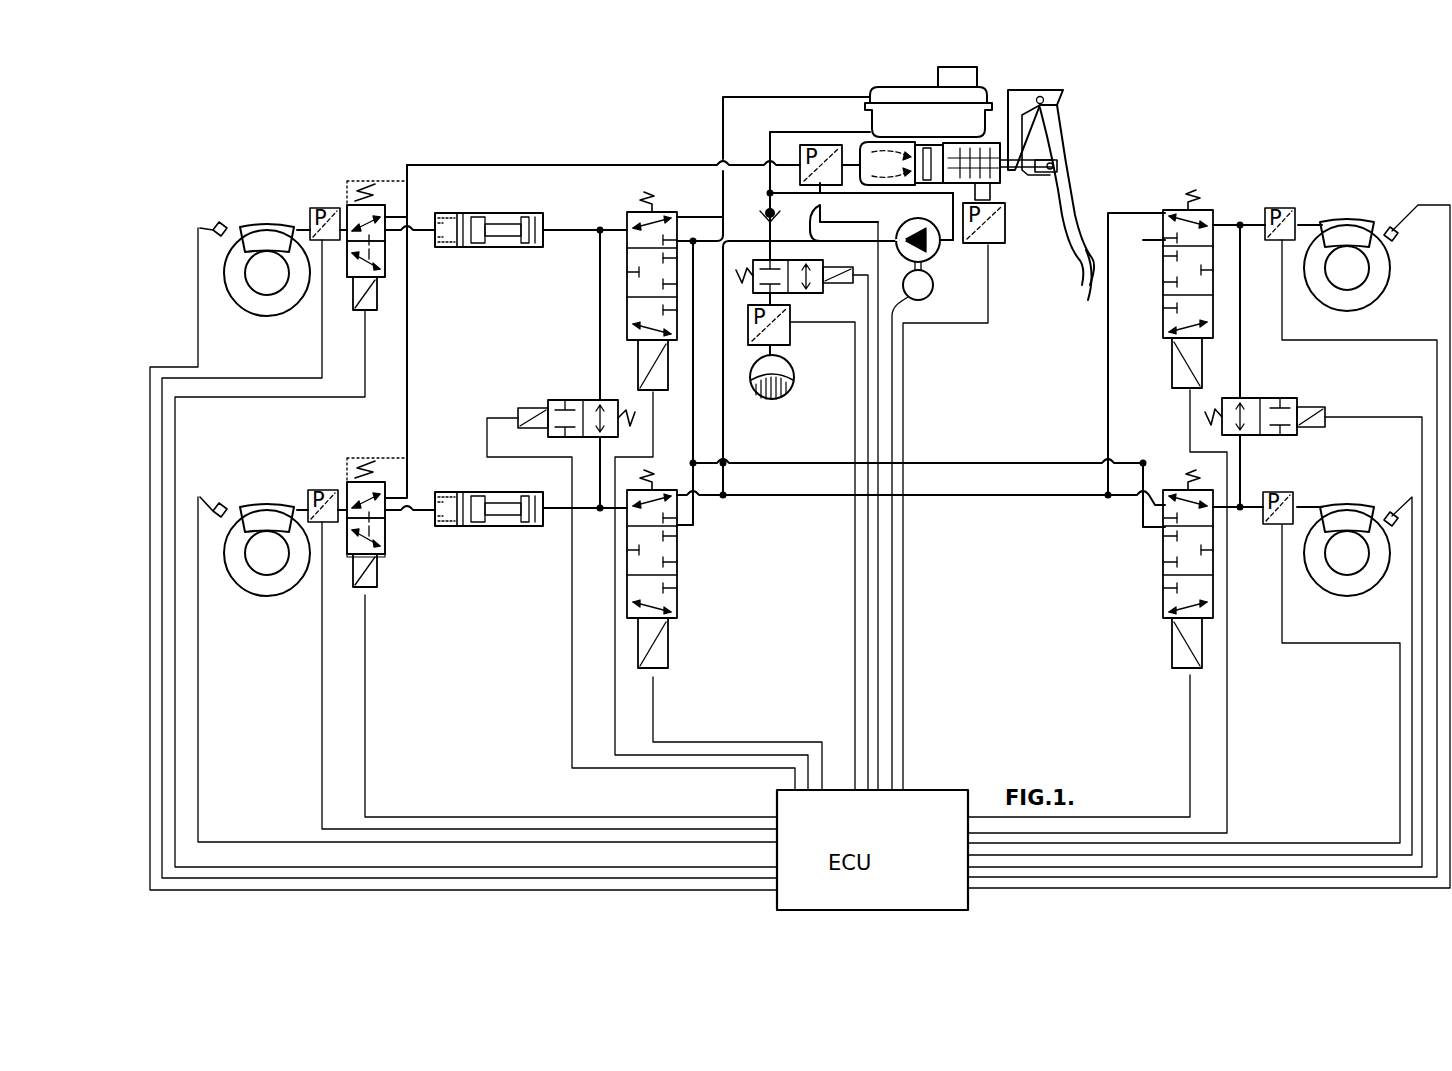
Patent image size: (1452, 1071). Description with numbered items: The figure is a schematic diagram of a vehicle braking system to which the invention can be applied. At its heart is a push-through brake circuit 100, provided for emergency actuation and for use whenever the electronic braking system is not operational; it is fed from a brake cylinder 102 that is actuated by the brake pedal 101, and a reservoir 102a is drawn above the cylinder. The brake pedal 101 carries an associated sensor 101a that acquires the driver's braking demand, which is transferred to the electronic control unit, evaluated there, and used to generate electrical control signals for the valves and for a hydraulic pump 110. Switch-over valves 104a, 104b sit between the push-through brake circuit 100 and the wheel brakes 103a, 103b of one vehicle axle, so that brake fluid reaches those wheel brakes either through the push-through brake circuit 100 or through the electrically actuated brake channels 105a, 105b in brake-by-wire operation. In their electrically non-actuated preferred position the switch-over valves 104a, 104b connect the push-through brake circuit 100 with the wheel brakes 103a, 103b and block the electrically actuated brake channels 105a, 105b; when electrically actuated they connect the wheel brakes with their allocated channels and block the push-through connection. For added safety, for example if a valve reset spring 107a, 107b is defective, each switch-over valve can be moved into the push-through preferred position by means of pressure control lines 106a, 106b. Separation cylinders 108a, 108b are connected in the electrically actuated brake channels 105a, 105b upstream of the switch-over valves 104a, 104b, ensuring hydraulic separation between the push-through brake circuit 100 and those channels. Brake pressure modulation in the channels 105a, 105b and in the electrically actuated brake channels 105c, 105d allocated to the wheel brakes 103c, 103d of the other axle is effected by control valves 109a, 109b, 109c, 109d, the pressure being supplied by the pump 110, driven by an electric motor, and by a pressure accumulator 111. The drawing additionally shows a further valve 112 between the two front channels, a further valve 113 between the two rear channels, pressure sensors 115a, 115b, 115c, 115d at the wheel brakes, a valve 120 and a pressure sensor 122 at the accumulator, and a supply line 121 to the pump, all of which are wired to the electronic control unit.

The push-through brake circuit 100 is at (603, 150).
The brake pedal 101 is at (1058, 215).
The sensor 101a is at (1007, 225).
The brake cylinder 102 is at (905, 160).
The fluid reservoir 102a is at (880, 93).
The wheel brake 103a is at (262, 226).
The wheel brake 103b is at (262, 500).
The wheel brake 103c is at (1348, 500).
The wheel brake 103d is at (1347, 224).
The switch-over valve 104a is at (385, 258).
The switch-over valve 104b is at (385, 542).
The electrically-actuated brake channel 105a is at (573, 230).
The electrically-actuated brake channel 105b is at (590, 512).
The electrically-actuated brake channel 105c is at (1244, 515).
The electrically-actuated brake channel 105d is at (1245, 223).
The pressure control line 106a is at (368, 181).
The pressure control line 106b is at (390, 450).
The valve reset spring 107a is at (385, 212).
The valve reset spring 107b is at (407, 485).
The separation cylinder 108a is at (495, 248).
The separation cylinder 108b is at (480, 528).
The control valve 109a is at (627, 290).
The control valve 109b is at (677, 550).
The control valve 109c is at (1165, 566).
The control valve 109d is at (1165, 283).
The hydraulic pump 110 is at (988, 305).
The pressure accumulator 111 is at (772, 399).
The balance valve 112 is at (567, 398).
The balance valve 113 is at (1268, 397).
The wheel brake pressure sensor 115a is at (322, 207).
The wheel brake pressure sensor 115b is at (322, 489).
The wheel brake pressure sensor 115c is at (1280, 491).
The wheel brake pressure sensor 115d is at (1280, 207).
The pressure control valve 120 is at (805, 296).
The supply line 121 is at (822, 206).
The accumulator pressure sensor 122 is at (793, 333).